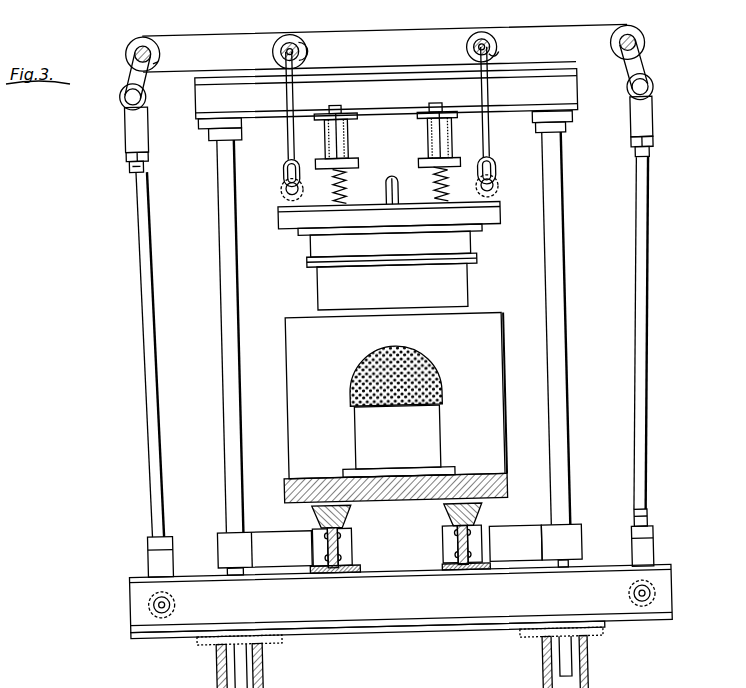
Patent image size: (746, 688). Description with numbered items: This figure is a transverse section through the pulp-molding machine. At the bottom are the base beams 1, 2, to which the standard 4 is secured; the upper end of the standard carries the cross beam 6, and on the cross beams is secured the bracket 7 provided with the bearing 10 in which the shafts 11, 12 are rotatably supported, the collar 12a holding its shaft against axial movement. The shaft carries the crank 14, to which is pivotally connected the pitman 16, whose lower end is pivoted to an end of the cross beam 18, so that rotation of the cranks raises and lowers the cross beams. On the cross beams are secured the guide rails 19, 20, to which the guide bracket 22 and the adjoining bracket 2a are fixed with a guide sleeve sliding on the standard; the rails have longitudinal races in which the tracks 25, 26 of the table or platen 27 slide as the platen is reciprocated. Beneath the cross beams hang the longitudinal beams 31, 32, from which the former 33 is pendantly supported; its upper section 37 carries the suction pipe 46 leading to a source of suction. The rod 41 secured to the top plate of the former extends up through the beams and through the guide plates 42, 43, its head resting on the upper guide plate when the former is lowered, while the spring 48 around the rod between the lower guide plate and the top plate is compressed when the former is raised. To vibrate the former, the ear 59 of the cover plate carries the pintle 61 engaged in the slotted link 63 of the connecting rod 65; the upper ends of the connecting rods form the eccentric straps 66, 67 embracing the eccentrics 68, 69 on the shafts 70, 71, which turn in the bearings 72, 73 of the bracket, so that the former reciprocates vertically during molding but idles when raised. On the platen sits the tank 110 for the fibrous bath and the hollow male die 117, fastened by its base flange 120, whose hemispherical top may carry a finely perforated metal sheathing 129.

The base beam 1 is at (210, 678).
The base beam 2 is at (582, 666).
The bracket 2a is at (568, 532).
The standard 4 is at (221, 372).
The cross beam 6 is at (400, 80).
The bracket 7 is at (385, 48).
The bearing 10 is at (140, 36).
The shaft 11 is at (162, 55).
The shaft 12 is at (649, 45).
The collar 12a is at (152, 38).
The crank 14 is at (152, 78).
The pitman 16 is at (151, 272).
The cross beam 18 is at (397, 608).
The guide rail 19 is at (348, 518).
The guide rail 20 is at (441, 519).
The guide bracket 22 is at (275, 536).
The track 25 is at (335, 545).
The track 26 is at (455, 527).
The table or platen 27 is at (506, 490).
The longitudinal beam 31 is at (350, 133).
The longitudinal beam 32 is at (434, 134).
The former 33 is at (392, 286).
The upper section 37 is at (458, 243).
The rod 41 is at (331, 131).
The guide plate 42 is at (424, 164).
The guide plate 43 is at (426, 114).
The suction pipe 46 is at (400, 189).
The spring 48 is at (350, 184).
The ear 59 is at (289, 197).
The pintle 61 is at (291, 183).
The link 63 is at (290, 160).
The connecting rod 65 is at (293, 98).
The eccentric strap 66 is at (300, 40).
The eccentric strap 67 is at (493, 37).
The eccentric 68 is at (282, 53).
The eccentric 69 is at (506, 53).
The shaft 70 is at (291, 36).
The shaft 71 is at (476, 50).
The bearing 72 is at (310, 44).
The bearing 73 is at (478, 37).
The vat or tank 110 is at (503, 409).
The male die 117 is at (412, 443).
The base flange 120 is at (345, 470).
The metal sheathing 129 is at (441, 374).